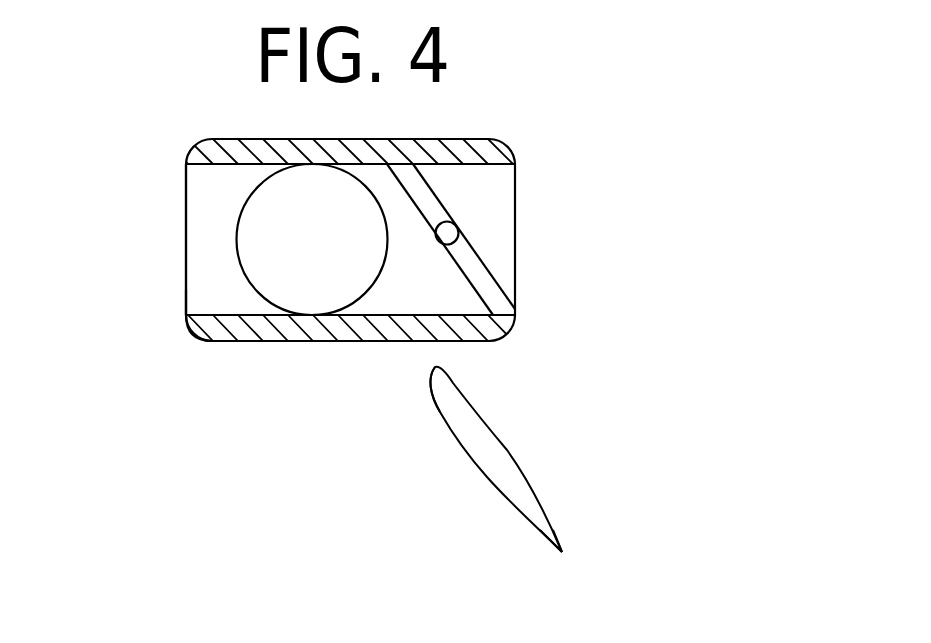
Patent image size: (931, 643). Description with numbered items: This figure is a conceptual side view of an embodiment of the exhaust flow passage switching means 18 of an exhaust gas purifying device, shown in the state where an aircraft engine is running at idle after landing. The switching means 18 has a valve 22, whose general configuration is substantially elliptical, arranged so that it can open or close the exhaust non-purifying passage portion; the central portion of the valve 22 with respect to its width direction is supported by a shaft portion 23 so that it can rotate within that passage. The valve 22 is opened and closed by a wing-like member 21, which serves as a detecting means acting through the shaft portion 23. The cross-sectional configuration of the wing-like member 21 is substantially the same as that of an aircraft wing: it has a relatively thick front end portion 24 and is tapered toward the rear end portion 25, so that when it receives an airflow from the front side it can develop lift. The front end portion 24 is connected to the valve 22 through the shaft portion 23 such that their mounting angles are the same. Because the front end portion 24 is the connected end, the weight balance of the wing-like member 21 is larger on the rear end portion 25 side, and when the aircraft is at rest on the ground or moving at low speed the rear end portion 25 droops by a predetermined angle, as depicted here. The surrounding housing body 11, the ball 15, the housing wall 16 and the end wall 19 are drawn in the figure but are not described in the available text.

The housing body 11 is at (240, 343).
The ball 15 is at (238, 265).
The housing wall 16 is at (184, 360).
The exhaust flow passage switching means 18 is at (682, 341).
The end wall 19 is at (186, 212).
The wing-like member 21 is at (512, 453).
The valve 22 is at (488, 270).
The shaft portion 23 is at (459, 228).
The front end portion 24 is at (430, 374).
The rear end portion 25 is at (562, 553).